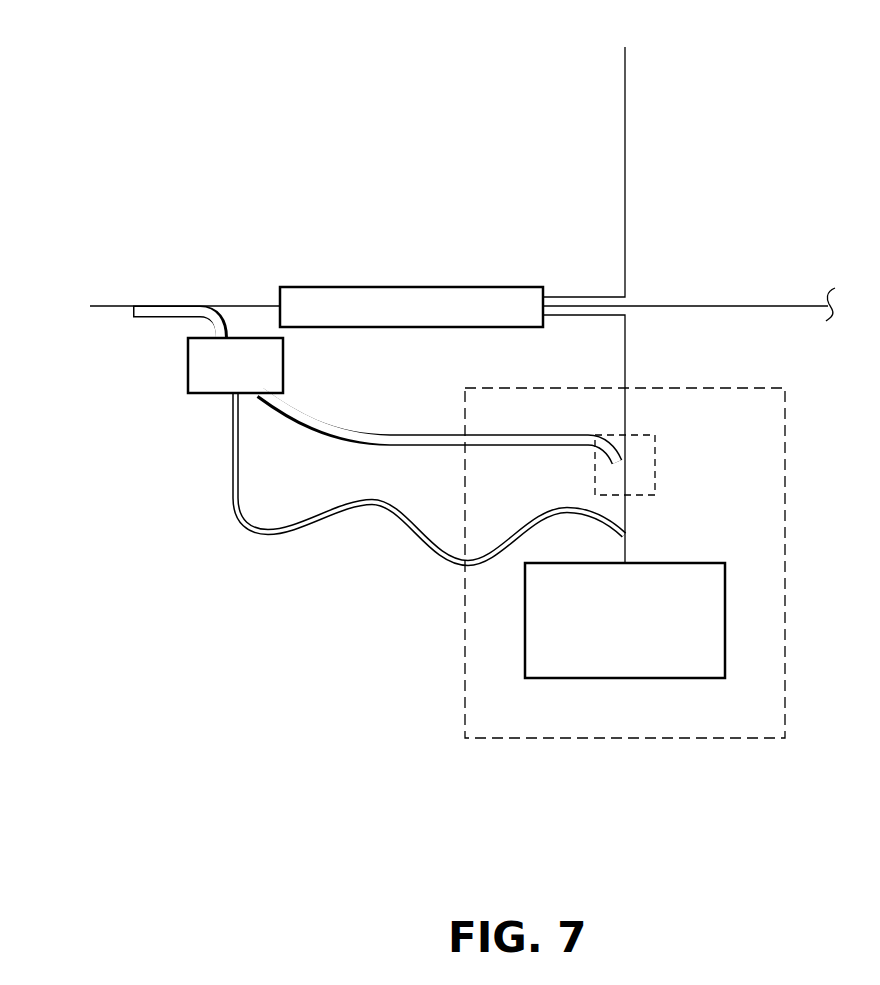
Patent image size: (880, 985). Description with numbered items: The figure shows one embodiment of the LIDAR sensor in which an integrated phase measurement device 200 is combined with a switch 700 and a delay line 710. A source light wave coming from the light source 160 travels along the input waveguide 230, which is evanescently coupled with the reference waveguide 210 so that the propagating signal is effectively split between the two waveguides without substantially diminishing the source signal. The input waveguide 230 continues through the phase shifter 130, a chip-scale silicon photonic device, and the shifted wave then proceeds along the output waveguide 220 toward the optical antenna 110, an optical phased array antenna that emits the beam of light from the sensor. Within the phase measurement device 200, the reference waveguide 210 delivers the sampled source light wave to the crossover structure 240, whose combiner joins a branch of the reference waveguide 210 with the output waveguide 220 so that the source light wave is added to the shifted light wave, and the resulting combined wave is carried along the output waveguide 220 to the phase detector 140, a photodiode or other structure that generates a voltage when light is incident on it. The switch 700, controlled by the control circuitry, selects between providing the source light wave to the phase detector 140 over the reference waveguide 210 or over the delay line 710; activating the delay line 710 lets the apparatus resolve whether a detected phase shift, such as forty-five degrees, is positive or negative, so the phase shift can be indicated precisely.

The optical antenna 110 is at (637, 34).
The phase shifter 130 is at (400, 287).
The phase detector 140 is at (607, 665).
The light source 160 is at (57, 317).
The integrated phase measurement device 200 is at (787, 440).
The reference waveguide 210 is at (387, 447).
The output waveguide 220 is at (627, 350).
The input waveguide 230 is at (227, 303).
The crossover structure 240 is at (655, 462).
The switch 700 is at (253, 386).
The delay line 710 is at (422, 537).